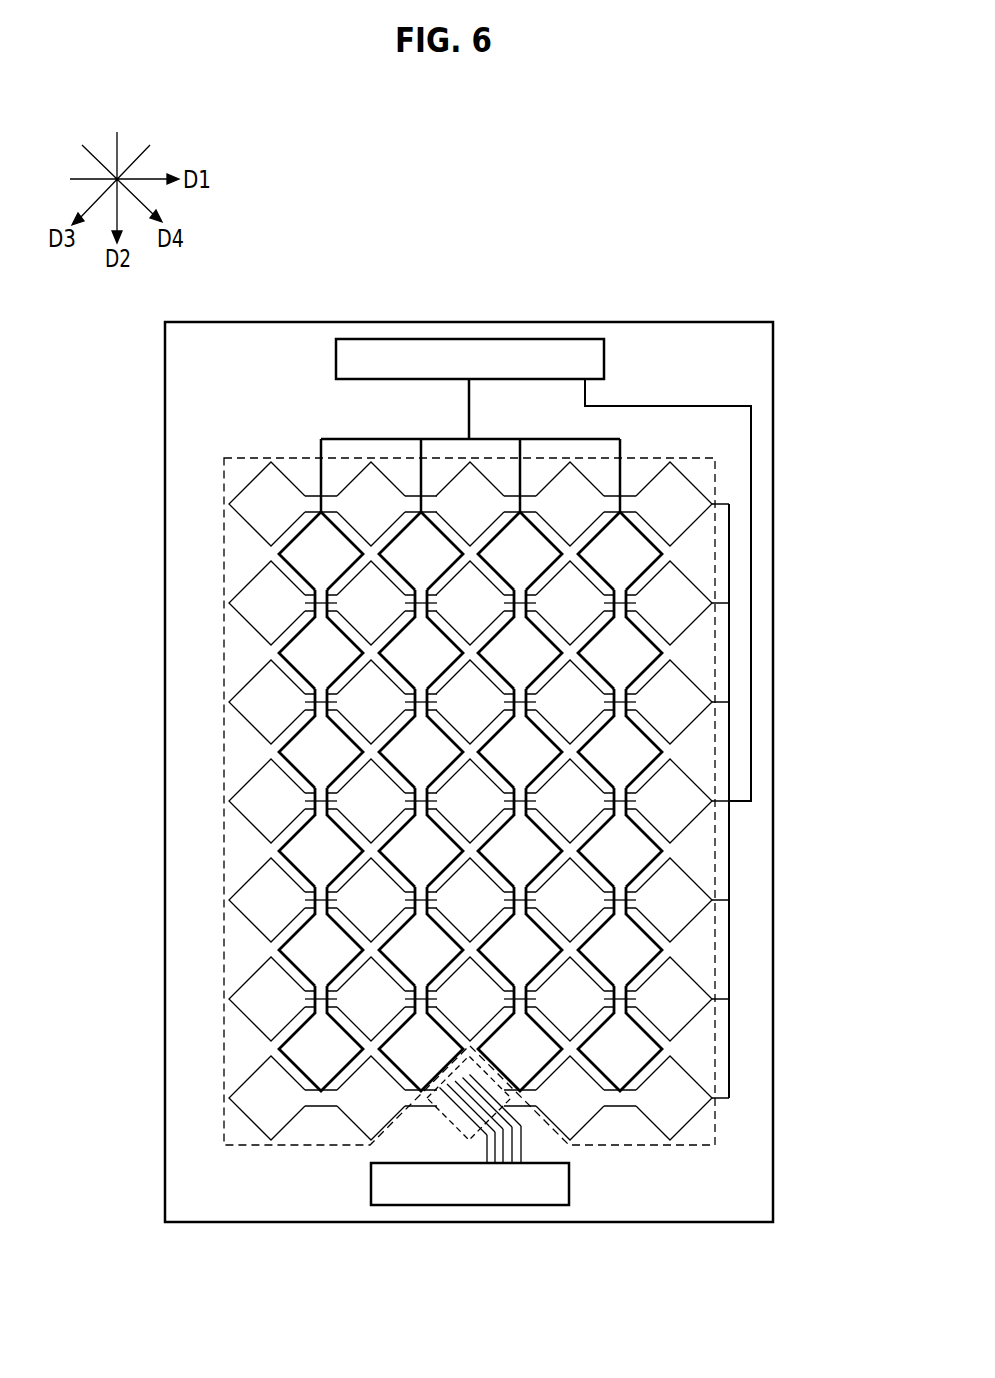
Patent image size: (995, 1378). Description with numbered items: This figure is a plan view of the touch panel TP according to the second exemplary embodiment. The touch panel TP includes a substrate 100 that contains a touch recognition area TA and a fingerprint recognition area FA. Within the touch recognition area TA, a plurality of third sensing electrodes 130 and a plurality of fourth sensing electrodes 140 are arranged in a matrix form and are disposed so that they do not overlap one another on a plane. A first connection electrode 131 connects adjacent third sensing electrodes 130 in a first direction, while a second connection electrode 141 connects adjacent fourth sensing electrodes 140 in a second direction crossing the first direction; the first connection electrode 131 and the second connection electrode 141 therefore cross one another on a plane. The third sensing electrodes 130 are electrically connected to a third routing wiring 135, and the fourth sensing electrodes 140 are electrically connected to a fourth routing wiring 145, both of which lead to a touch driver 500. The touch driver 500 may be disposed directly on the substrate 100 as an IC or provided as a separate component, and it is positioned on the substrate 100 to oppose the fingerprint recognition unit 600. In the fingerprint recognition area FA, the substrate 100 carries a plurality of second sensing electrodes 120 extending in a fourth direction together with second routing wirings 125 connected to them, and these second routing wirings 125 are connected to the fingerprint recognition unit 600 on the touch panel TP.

The substrate 100 is at (763, 362).
The second sensing electrode 120 is at (454, 1110).
The second routing wiring 125 is at (521, 1146).
The third sensing electrode 130 is at (247, 496).
The first connection electrode 131 is at (313, 500).
The third routing wiring 135 is at (751, 445).
The fourth sensing electrode 140 is at (305, 568).
The second connection electrode 141 is at (316, 604).
The fourth routing wiring 145 is at (469, 407).
The touch driver 500 is at (527, 348).
The fingerprint recognition unit 600 is at (387, 1187).
The touch panel TP is at (692, 297).
The touch recognition area TA is at (683, 1147).
The fingerprint recognition area FA is at (465, 1128).